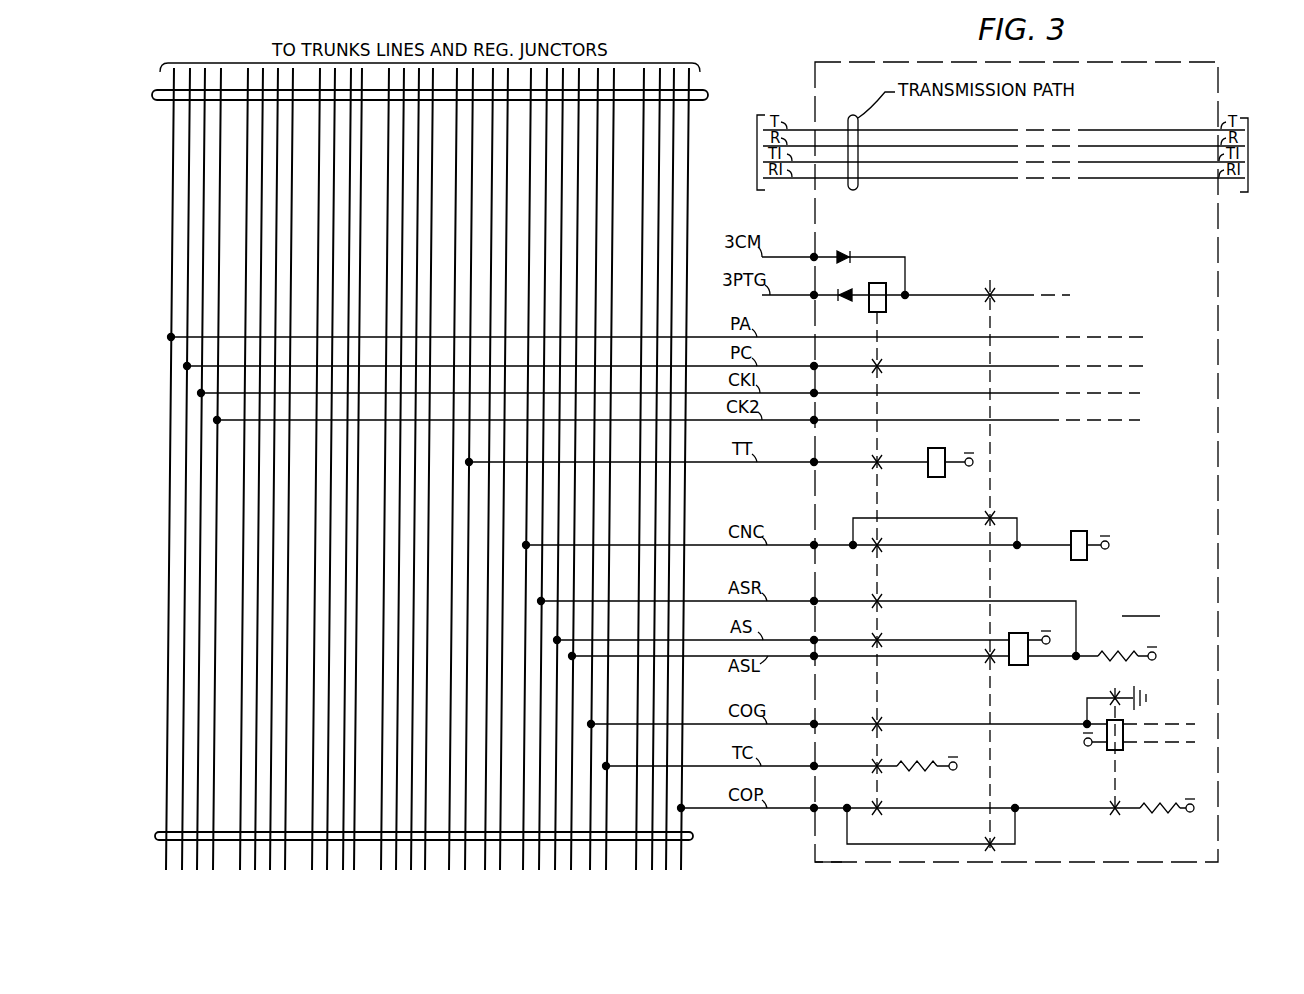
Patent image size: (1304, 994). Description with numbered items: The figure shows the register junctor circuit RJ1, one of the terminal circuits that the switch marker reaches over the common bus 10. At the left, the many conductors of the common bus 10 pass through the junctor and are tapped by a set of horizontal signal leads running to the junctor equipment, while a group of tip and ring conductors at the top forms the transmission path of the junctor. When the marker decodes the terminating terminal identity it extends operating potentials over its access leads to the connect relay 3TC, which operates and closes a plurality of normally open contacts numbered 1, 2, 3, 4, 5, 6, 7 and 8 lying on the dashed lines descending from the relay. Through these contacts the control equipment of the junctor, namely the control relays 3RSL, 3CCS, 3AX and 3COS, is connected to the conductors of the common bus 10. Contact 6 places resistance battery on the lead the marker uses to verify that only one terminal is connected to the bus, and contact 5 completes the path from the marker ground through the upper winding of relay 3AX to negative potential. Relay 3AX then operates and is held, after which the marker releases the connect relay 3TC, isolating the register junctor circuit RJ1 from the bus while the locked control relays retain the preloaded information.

The common bus 10 is at (158, 92).
The relay contact 1 is at (985, 290).
The relay contact 2 is at (872, 459).
The relay contact 3 is at (872, 551).
The relay contact 4 is at (872, 598).
The relay contact 5 is at (872, 637).
The relay contact 6 is at (872, 721).
The relay contact 7 is at (872, 763).
The relay contact 8 is at (872, 805).
The connect relay 3TC is at (882, 303).
The control relay 3RSL is at (938, 448).
The control relay 3CCS is at (1080, 531).
The control relay 3AX is at (1012, 665).
The control relay 3COS is at (1123, 748).
The register junctor circuit RJ1 is at (1141, 606).